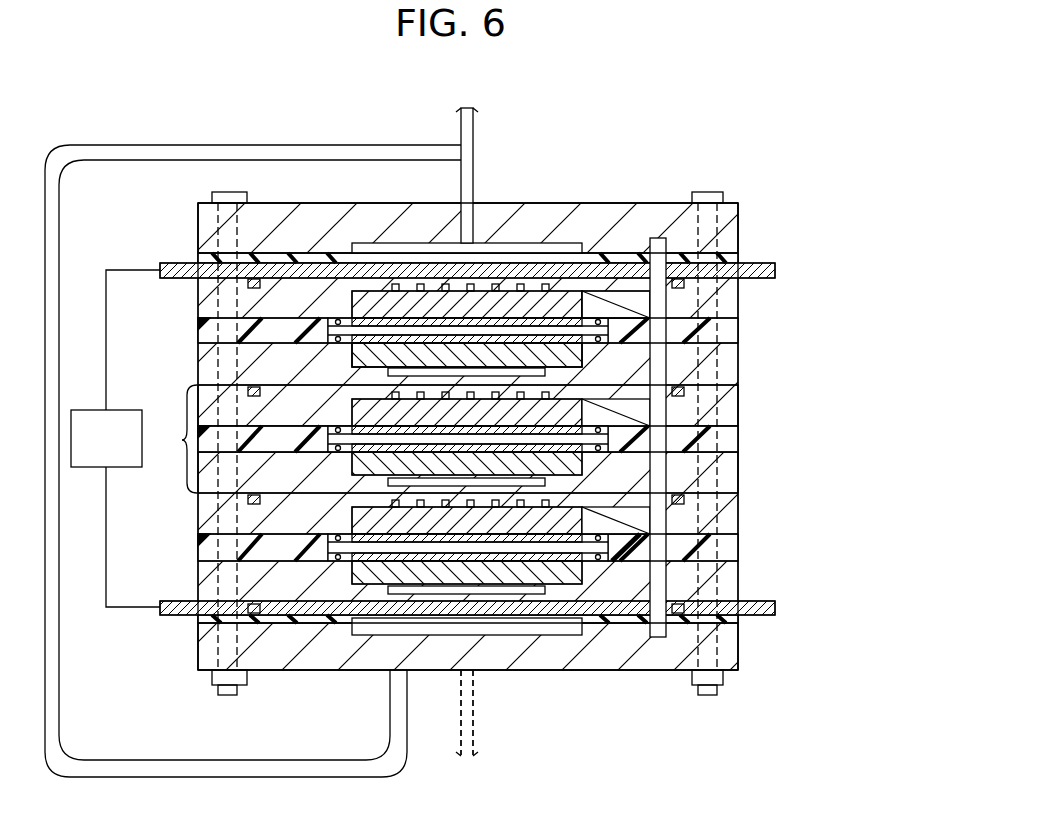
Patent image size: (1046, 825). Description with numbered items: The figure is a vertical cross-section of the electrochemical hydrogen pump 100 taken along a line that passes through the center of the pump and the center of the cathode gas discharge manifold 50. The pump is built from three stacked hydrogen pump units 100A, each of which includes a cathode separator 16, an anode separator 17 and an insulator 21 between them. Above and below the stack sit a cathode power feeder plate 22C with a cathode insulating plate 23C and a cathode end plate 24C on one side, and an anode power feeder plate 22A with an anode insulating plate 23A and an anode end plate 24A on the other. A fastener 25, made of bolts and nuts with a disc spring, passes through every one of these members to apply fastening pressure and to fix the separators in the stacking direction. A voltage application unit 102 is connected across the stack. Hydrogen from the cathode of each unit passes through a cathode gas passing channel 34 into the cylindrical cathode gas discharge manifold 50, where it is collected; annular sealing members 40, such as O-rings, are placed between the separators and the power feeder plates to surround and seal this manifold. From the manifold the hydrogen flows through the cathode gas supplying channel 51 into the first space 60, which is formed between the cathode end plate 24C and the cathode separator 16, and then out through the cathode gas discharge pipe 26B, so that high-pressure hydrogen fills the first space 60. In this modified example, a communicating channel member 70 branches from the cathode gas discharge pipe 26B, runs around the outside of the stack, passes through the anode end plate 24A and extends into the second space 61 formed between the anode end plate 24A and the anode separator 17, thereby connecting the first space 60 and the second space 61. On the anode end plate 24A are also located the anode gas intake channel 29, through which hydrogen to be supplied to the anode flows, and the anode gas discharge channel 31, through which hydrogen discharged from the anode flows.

The electrochemical hydrogen pump 100 is at (397, 79).
The communicating channel member 70 is at (222, 145).
The cathode gas discharge pipe 26B is at (470, 128).
The first space 60 is at (515, 242).
The cathode gas supplying channel 51 is at (623, 240).
The fastener 25 is at (708, 190).
The cathode end plate 24C is at (727, 215).
The cathode insulating plate 23C is at (727, 258).
The cathode power feeder plate 22C is at (778, 270).
The cathode gas passing channel 34 is at (668, 292).
The annular sealing member 40 is at (697, 378).
The cathode separator 16 is at (727, 405).
The insulator 21 is at (727, 440).
The anode separator 17 is at (727, 475).
The cathode gas discharge manifold 50 is at (660, 548).
The anode power feeder plate 22A is at (778, 608).
The anode insulating plate 23A is at (733, 618).
The anode end plate 24A is at (733, 645).
The second space 61 is at (530, 625).
The anode gas intake channel 29 is at (470, 722).
The anode gas discharge channel 31 is at (467, 712).
The voltage application unit 102 is at (125, 452).
The hydrogen pump unit 100A is at (182, 440).